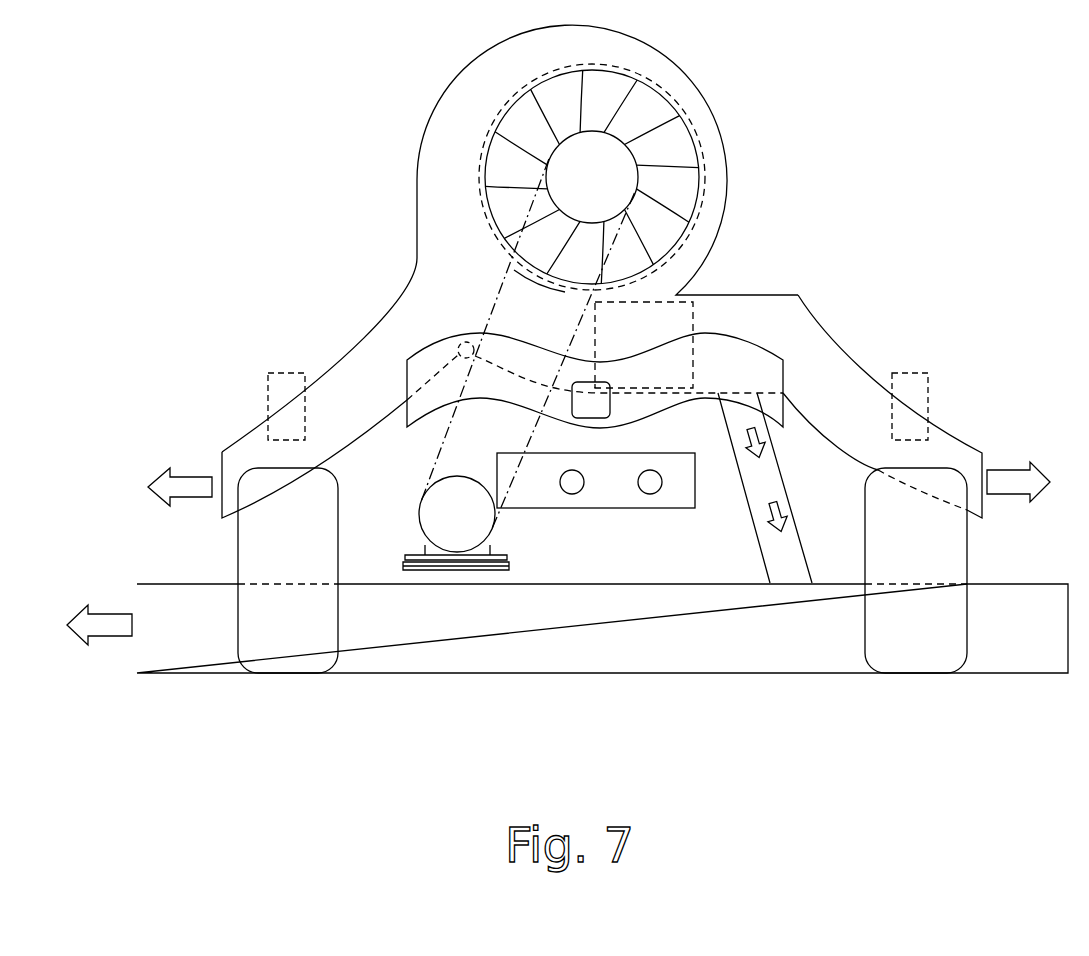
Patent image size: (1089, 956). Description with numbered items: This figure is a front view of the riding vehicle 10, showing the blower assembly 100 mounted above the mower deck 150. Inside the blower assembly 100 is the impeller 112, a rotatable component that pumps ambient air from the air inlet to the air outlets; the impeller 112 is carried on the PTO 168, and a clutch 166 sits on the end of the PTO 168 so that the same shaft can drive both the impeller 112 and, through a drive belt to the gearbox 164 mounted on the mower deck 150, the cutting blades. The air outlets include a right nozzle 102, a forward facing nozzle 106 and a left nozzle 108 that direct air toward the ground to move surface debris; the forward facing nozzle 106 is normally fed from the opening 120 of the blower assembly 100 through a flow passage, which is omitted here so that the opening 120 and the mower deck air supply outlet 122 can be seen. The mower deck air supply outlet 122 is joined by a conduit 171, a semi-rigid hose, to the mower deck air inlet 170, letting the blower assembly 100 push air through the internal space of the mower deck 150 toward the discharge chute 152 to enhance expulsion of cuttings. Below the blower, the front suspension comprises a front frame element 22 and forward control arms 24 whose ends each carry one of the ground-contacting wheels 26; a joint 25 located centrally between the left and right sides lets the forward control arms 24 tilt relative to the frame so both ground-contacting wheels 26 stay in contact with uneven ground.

The riding vehicle 10 is at (733, 84).
The front frame element 22 is at (425, 347).
The forward control arms 24 is at (290, 373).
The joint 25 is at (610, 412).
The ground-contacting wheels 26 is at (338, 632).
The blower assembly 100 is at (724, 190).
The right nozzle 102 is at (220, 457).
The forward facing nozzle 106 is at (598, 508).
The left nozzle 108 is at (982, 457).
The impeller 112 is at (658, 138).
The opening 120 is at (693, 316).
The mower deck air supply outlet 122 is at (740, 393).
The mower deck 150 is at (602, 673).
The discharge chute 152 is at (137, 658).
The gearbox 164 is at (427, 548).
The clutch 166 is at (568, 127).
The PTO 168 is at (602, 163).
The mower deck air inlet 170 is at (788, 583).
The conduit 171 is at (793, 510).